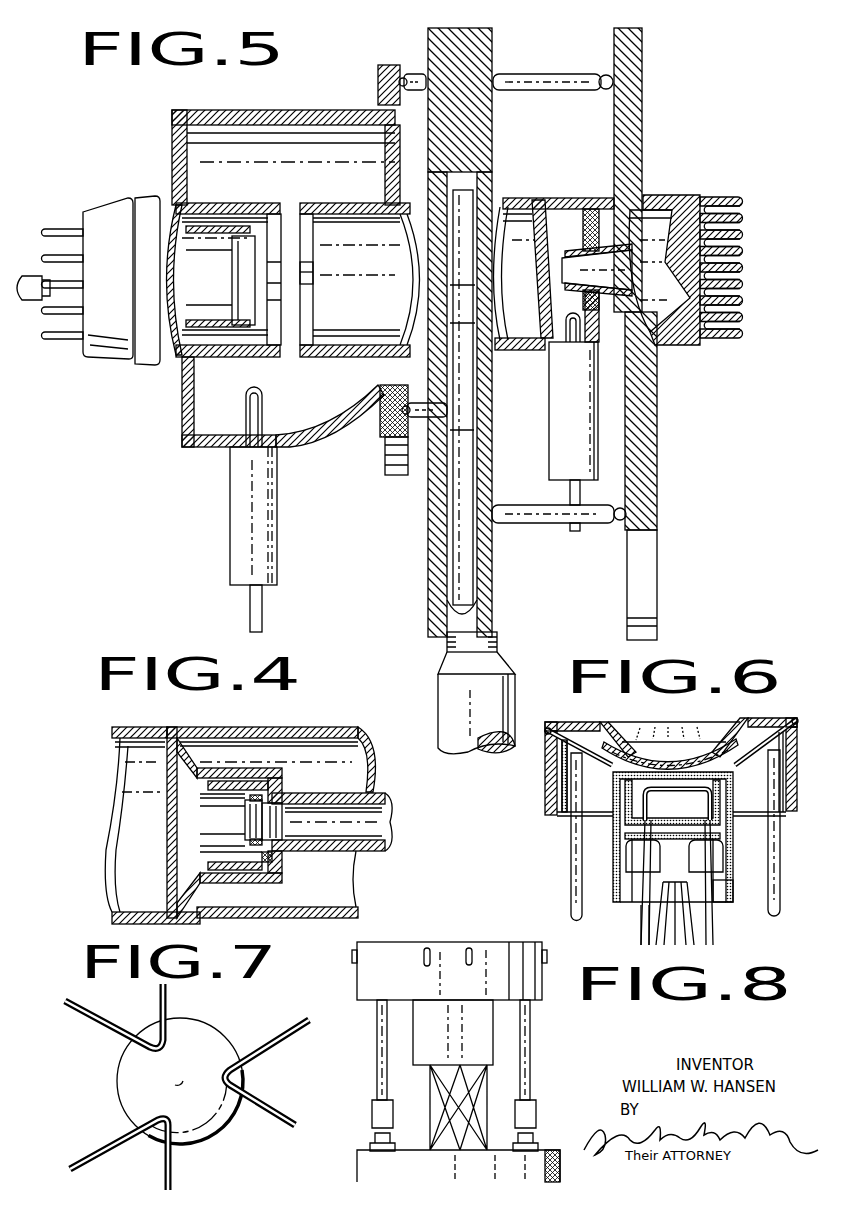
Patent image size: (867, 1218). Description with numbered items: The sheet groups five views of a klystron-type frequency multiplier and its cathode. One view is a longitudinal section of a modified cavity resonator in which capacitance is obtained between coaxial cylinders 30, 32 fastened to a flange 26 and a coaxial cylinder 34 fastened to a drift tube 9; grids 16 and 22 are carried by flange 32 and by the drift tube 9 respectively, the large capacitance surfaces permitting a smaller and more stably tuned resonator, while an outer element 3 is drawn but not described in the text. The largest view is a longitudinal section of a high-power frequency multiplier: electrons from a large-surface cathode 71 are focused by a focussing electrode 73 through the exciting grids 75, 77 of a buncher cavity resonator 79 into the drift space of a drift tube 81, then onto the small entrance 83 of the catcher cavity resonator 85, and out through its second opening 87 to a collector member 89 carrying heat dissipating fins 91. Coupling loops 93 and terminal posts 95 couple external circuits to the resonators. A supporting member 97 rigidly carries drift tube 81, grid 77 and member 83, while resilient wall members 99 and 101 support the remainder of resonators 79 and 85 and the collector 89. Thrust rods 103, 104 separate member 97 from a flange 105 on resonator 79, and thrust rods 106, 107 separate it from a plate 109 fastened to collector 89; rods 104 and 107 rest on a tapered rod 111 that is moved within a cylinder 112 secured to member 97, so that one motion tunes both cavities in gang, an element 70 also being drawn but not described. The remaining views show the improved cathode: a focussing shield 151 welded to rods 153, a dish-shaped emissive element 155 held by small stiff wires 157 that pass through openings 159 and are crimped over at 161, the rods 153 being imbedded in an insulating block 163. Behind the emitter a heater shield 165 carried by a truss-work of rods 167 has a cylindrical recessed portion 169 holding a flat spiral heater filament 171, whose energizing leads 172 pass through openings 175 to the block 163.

In FIG. 4, the outer tube 3 is at (266, 727).
In FIG. 4, the drift tube 9 is at (372, 797).
In FIG. 4, the grid 16 is at (245, 818).
In FIG. 4, the grid 22 is at (292, 851).
In FIG. 4, the flange 26 is at (150, 772).
In FIG. 4, the coaxial cylinder 30 is at (223, 768).
In FIG. 4, the coaxial cylinder 32 is at (192, 845).
In FIG. 4, the coaxial cylinder 34 is at (250, 870).
In FIG. 5, the tube 70 is at (236, 232).
In FIG. 5, the cathode 71 is at (196, 307).
In FIG. 5, the focussing electrode 73 is at (245, 357).
In FIG. 5, the exciting grid 75 is at (318, 324).
In FIG. 5, the exciting grid 77 is at (316, 300).
In FIG. 5, the buncher cavity resonator 79 is at (283, 120).
In FIG. 5, the drift tube 81 is at (355, 345).
In FIG. 5, the entrance opening 83 is at (520, 274).
In FIG. 5, the catcher cavity resonator 85 is at (562, 199).
In FIG. 5, the second opening 87 is at (592, 258).
In FIG. 5, the collector member 89 is at (683, 195).
In FIG. 5, the heat dissipating fins 91 is at (745, 212).
In FIG. 5, the coupling loops 93 is at (270, 410).
In FIG. 5, the terminal posts 95 is at (277, 510).
In FIG. 5, the supporting member 97 is at (478, 32).
In FIG. 5, the resilient wall member 99 is at (388, 172).
In FIG. 5, the resilient wall member 101 is at (598, 342).
In FIG. 5, the thrust rod 103 is at (414, 72).
In FIG. 5, the thrust rod 104 is at (420, 420).
In FIG. 5, the flange 105 is at (384, 70).
In FIG. 5, the thrust rod 106 is at (538, 74).
In FIG. 5, the thrust rod 107 is at (535, 525).
In FIG. 5, the plate 109 is at (657, 475).
In FIG. 5, the tapered rod 111 is at (435, 510).
In FIG. 5, the cylinder 112 is at (497, 592).
In FIG. 6, the focussing shield 151 is at (797, 764).
In FIG. 8, the focussing shield 151 is at (410, 942).
In FIG. 6, the supporting rods 153 is at (570, 836).
In FIG. 8, the supporting rods 153 is at (375, 1040).
In FIG. 6, the dish-shaped emissive element 155 is at (705, 750).
In FIG. 7, the dish-shaped emissive element 155 is at (226, 1026).
In FIG. 6, the stiff wires 157 is at (560, 726).
In FIG. 7, the stiff wires 157 is at (96, 1028).
In FIG. 6, the openings 159 is at (793, 718).
In FIG. 6, the crimped-over portion 161 is at (790, 748).
In FIG. 8, the insulating block 163 is at (556, 1150).
In FIG. 6, the heater shield 165 is at (733, 893).
In FIG. 8, the heater shield 165 is at (410, 1050).
In FIG. 6, the truss-work rods 167 is at (642, 933).
In FIG. 8, the truss-work rods 167 is at (490, 1103).
In FIG. 6, the cylindrical recessed portion 169 is at (728, 790).
In FIG. 6, the heater filament 171 is at (677, 796).
In FIG. 6, the energizing leads 172 is at (646, 908).
In FIG. 6, the openings 175 is at (674, 856).